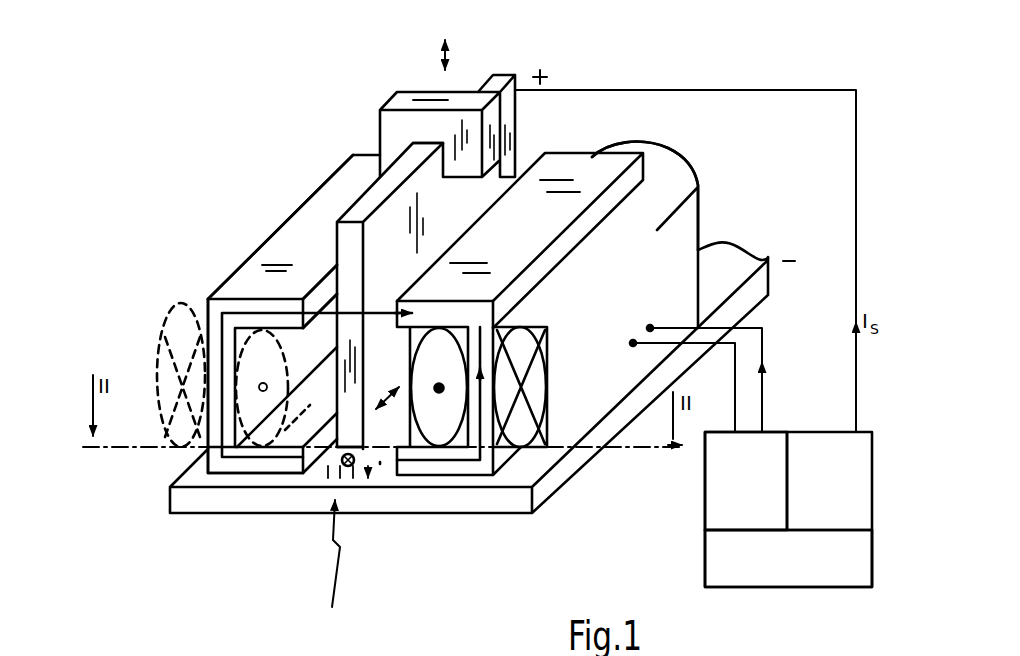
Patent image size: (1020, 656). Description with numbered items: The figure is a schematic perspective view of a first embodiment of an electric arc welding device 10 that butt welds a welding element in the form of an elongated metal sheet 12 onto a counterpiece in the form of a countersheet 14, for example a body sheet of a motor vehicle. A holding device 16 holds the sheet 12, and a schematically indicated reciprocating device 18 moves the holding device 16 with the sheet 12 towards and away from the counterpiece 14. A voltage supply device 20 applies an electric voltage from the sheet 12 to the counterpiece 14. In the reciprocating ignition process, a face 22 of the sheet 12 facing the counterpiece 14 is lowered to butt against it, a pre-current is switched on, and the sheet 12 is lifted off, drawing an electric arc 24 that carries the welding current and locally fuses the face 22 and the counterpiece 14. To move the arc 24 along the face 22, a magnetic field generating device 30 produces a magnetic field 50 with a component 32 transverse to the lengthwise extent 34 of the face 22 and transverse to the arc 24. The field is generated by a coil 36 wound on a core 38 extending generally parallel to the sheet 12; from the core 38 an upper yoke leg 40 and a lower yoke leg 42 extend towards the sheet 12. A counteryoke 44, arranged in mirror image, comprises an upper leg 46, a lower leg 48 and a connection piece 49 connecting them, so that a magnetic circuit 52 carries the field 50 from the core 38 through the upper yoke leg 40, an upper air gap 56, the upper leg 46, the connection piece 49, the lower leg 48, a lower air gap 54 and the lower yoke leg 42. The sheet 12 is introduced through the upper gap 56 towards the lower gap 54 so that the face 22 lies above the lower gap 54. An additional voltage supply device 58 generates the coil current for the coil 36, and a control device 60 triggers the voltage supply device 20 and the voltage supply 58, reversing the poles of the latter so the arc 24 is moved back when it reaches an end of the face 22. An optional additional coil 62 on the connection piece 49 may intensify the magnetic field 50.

The electric arc welding device 10 is at (147, 173).
The sheet 12 is at (387, 222).
The countersheet 14 is at (253, 507).
The holding device 16 is at (407, 130).
The reciprocating device 18 is at (453, 57).
The voltage supply device 20 is at (842, 498).
The face 22 is at (362, 449).
The electric arc 24 is at (335, 571).
The magnetic field generating device 30 is at (718, 183).
The component 32 is at (337, 448).
The lengthwise extent 34 is at (392, 393).
The coil 36 is at (525, 350).
The core 38 is at (497, 418).
The upper yoke leg 40 is at (553, 167).
The lower yoke leg 42 is at (453, 473).
The counteryoke 44 is at (257, 247).
The upper leg 46 is at (303, 228).
The lower leg 48 is at (233, 468).
The connection piece 49 is at (208, 448).
The magnetic field 50 is at (487, 398).
The magnetic circuit 52 is at (245, 315).
The lower air gap 54 is at (383, 463).
The upper air gap 56 is at (318, 300).
The additional voltage supply device 58 is at (762, 498).
The control device 60 is at (797, 570).
The additional coil 62 is at (173, 333).